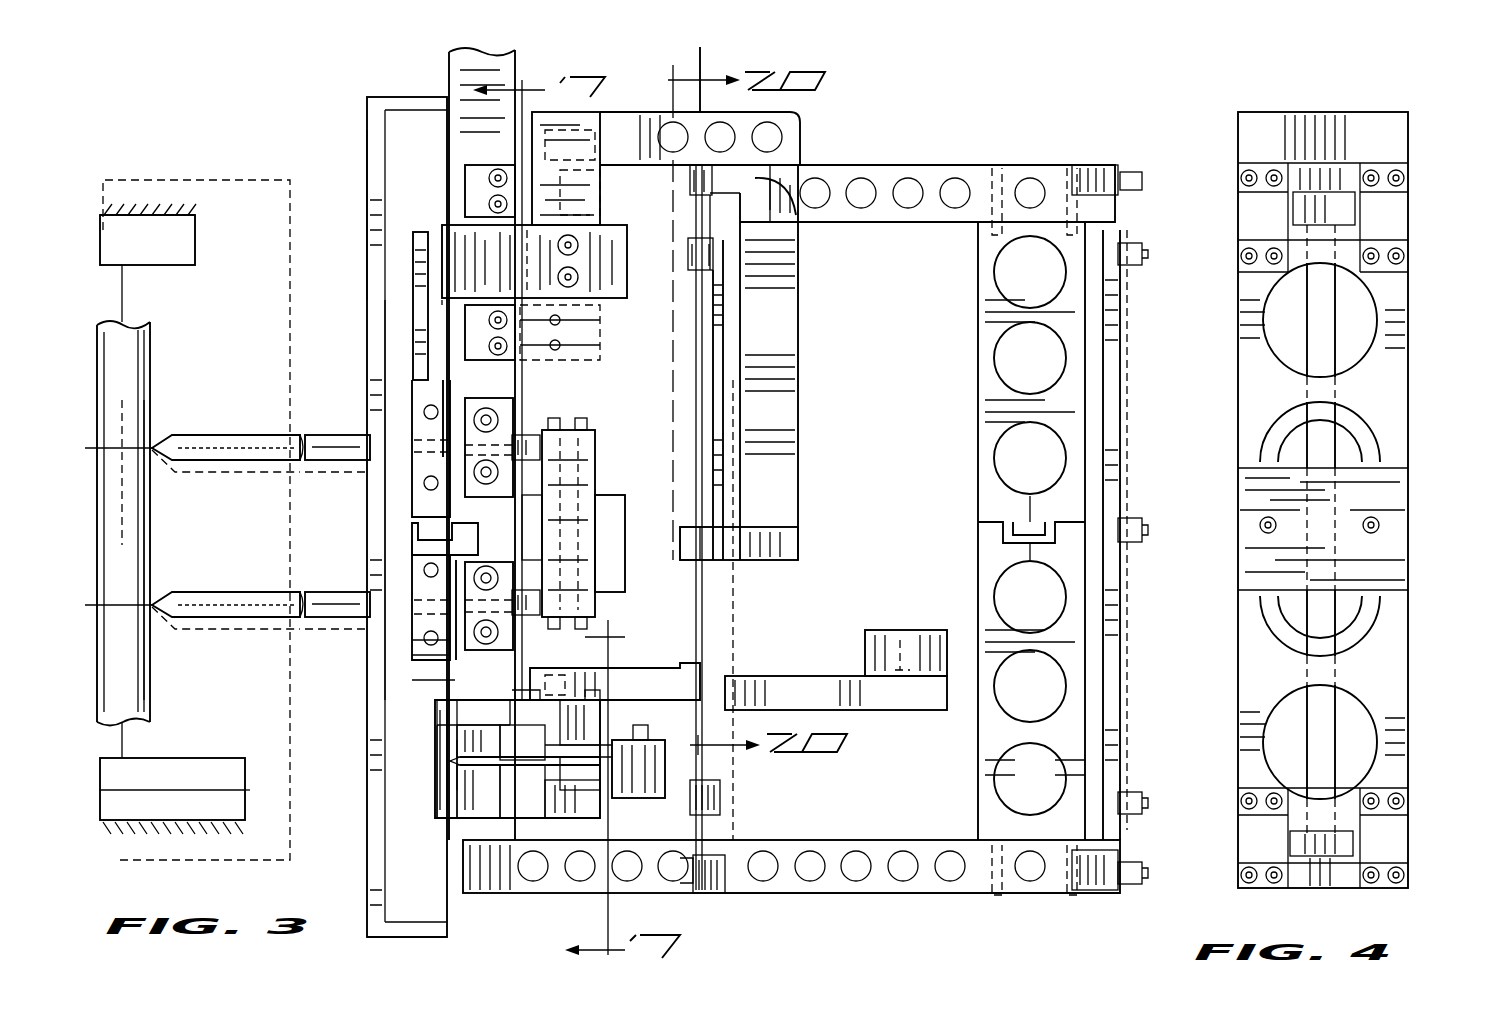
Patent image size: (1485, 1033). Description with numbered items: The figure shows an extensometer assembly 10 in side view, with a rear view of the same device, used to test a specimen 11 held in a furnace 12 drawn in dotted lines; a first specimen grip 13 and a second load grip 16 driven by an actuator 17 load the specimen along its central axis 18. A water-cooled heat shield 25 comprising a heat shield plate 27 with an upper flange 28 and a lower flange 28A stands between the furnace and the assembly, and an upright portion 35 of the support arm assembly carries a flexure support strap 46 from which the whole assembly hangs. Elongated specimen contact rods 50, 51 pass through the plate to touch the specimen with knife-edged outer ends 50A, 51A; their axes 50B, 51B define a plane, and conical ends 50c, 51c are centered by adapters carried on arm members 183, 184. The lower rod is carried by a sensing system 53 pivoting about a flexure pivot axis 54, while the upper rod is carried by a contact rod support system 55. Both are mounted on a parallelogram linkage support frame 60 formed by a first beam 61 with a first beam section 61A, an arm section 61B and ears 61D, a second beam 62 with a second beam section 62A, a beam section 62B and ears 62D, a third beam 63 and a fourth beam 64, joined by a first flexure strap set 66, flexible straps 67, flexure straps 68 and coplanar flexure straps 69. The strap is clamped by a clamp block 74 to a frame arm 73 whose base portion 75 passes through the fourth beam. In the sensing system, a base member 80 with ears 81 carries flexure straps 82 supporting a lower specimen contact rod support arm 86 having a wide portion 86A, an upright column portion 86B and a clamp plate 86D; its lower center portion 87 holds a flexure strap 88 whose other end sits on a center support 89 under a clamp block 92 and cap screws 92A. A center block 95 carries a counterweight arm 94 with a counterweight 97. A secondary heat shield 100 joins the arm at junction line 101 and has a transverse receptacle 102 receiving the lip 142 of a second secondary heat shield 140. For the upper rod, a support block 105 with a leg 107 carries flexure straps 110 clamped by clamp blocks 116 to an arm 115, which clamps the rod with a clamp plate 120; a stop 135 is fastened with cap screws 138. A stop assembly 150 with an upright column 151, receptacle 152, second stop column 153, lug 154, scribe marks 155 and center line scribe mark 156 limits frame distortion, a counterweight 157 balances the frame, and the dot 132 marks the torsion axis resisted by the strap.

In FIG. 3, the extensometer assembly 10 is at (805, 245).
In FIG. 3, the specimen 11 is at (152, 380).
In FIG. 3, the furnace 12 is at (149, 178).
In FIG. 3, the first specimen grip 13 is at (195, 234).
In FIG. 3, the second load grip 16 is at (186, 758).
In FIG. 3, the actuator 17 is at (246, 800).
In FIG. 3, the central axis 18 is at (120, 357).
In FIG. 3, the heat shield 25 is at (367, 131).
In FIG. 3, the heat shield plate 27 is at (385, 333).
In FIG. 3, the upper flange 28 is at (372, 97).
In FIG. 3, the lower flange 28A is at (383, 937).
In FIG. 3, the upright portion 35 is at (455, 72).
In FIG. 3, the flexure support strap 46 is at (705, 75).
In FIG. 3, the first specimen contact rod 50 is at (333, 435).
In FIG. 3, the outer end of first rod 50A is at (160, 433).
In FIG. 3, the axis of rod 50 50B is at (156, 455).
In FIG. 3, the conical end 50c is at (545, 435).
In FIG. 3, the second specimen contact rod 51 is at (333, 592).
In FIG. 3, the outer end of second rod 51A is at (160, 590).
In FIG. 3, the axis of rod 51 51B is at (156, 612).
In FIG. 3, the conical end 51c is at (528, 618).
In FIG. 3, the sensing system 53 is at (508, 749).
In FIG. 3, the flexure pivot axis 54 is at (530, 792).
In FIG. 3, the contact rod support system 55 is at (442, 228).
In FIG. 3, the parallelogram linkage support frame 60 is at (1025, 165).
In FIG. 4, the first beam 61 is at (1335, 212).
In FIG. 3, the first beam section 61A is at (932, 225).
In FIG. 3, the arm section of beam 61 61B is at (790, 128).
In FIG. 3, the ears 61D is at (768, 180).
In FIG. 3, the second beam 62 is at (1030, 893).
In FIG. 4, the second beam 62 is at (1328, 858).
In FIG. 3, the second beam section 62A is at (862, 893).
In FIG. 3, the beam section 62B is at (514, 893).
In FIG. 3, the ears 62D is at (735, 893).
In FIG. 3, the third beam 63 is at (1112, 726).
In FIG. 4, the third beam 63 is at (1253, 428).
In FIG. 3, the fourth beam 64 is at (724, 342).
In FIG. 3, the first flexure strap set 66 is at (1112, 240).
In FIG. 4, the first flexure strap set 66 is at (1398, 205).
In FIG. 3, the flexible straps 67 is at (1120, 842).
In FIG. 4, the flexible straps 67 is at (1372, 822).
In FIG. 3, the flexure straps 68 is at (742, 228).
In FIG. 3, the coplanar flexure straps 69 is at (712, 830).
In FIG. 3, the parallel linkage support frame arm 73 is at (782, 403).
In FIG. 3, the clamp block 74 is at (686, 527).
In FIG. 3, the base portion 75 is at (785, 546).
In FIG. 3, the base member 80 is at (448, 818).
In FIG. 3, the ears 81 is at (475, 820).
In FIG. 3, the flexure straps 82 is at (555, 768).
In FIG. 3, the lower specimen contact rod support arm 86 is at (425, 735).
In FIG. 3, the wide portion 86A is at (505, 700).
In FIG. 3, the upright column portion 86B is at (445, 657).
In FIG. 3, the clamp plate 86D is at (478, 582).
In FIG. 3, the lower center portion 87 is at (440, 746).
In FIG. 3, the flexure strap 88 is at (448, 800).
In FIG. 3, the center support 89 is at (722, 778).
In FIG. 3, the clamp block 92 is at (684, 752).
In FIG. 3, the cap screws 92A is at (600, 722).
In FIG. 3, the counterweight arm 94 is at (842, 690).
In FIG. 3, the center block 95 is at (582, 700).
In FIG. 3, the counterweight 97 is at (893, 630).
In FIG. 3, the secondary heat shield 100 is at (428, 636).
In FIG. 3, the junction line 101 is at (432, 682).
In FIG. 3, the transverse receptacle 102 is at (462, 525).
In FIG. 3, the support block 105 is at (605, 112).
In FIG. 3, the leg 107 is at (562, 310).
In FIG. 3, the flexure straps 110 is at (520, 192).
In FIG. 3, the arm 115 is at (466, 182).
In FIG. 3, the clamp blocks 116 is at (490, 170).
In FIG. 3, the clamp plate 120 is at (500, 417).
In FIG. 4, the axis 132 is at (1320, 527).
In FIG. 3, the stop 135 is at (442, 280).
In FIG. 3, the cap screws 138 is at (580, 277).
In FIG. 3, the secondary heat shield 140 is at (413, 240).
In FIG. 3, the lip 142 is at (450, 523).
In FIG. 3, the stop assembly 150 is at (976, 472).
In FIG. 3, the upright column 151 is at (994, 736).
In FIG. 4, the upright column 151 is at (1320, 760).
In FIG. 3, the receptacle 152 is at (1002, 532).
In FIG. 3, the second stop column 153 is at (990, 398).
In FIG. 4, the second stop column 153 is at (1325, 340).
In FIG. 3, the lug 154 is at (1003, 515).
In FIG. 3, the scribe marks 155 is at (1035, 520).
In FIG. 3, the center line scribe mark 156 is at (1030, 562).
In FIG. 4, the counterweight 157 is at (1255, 465).
In FIG. 3, the arm member 183 is at (590, 484).
In FIG. 3, the arm member 184 is at (590, 540).